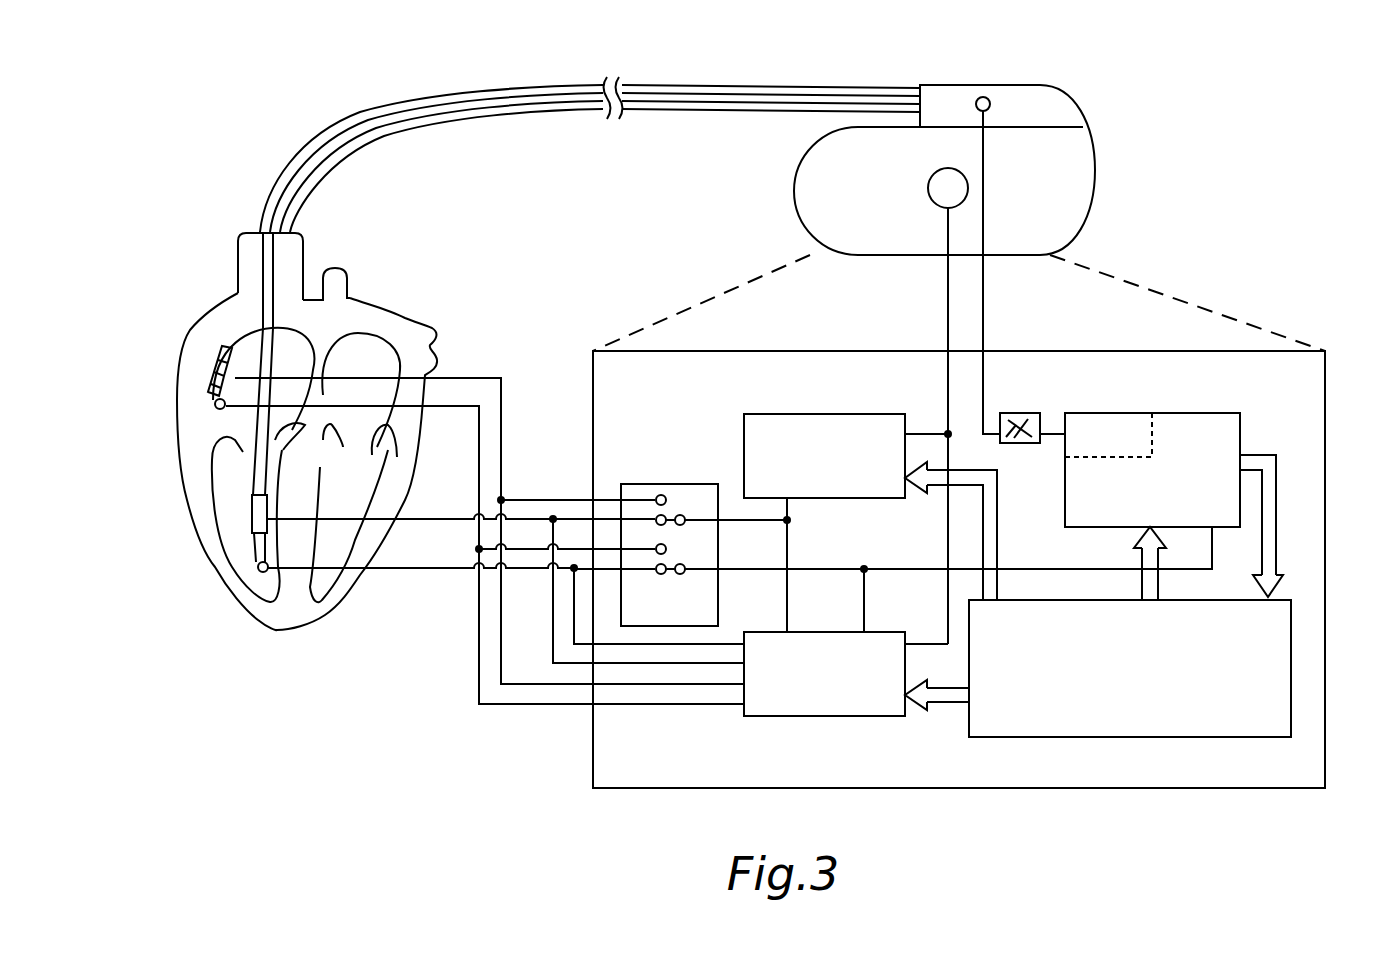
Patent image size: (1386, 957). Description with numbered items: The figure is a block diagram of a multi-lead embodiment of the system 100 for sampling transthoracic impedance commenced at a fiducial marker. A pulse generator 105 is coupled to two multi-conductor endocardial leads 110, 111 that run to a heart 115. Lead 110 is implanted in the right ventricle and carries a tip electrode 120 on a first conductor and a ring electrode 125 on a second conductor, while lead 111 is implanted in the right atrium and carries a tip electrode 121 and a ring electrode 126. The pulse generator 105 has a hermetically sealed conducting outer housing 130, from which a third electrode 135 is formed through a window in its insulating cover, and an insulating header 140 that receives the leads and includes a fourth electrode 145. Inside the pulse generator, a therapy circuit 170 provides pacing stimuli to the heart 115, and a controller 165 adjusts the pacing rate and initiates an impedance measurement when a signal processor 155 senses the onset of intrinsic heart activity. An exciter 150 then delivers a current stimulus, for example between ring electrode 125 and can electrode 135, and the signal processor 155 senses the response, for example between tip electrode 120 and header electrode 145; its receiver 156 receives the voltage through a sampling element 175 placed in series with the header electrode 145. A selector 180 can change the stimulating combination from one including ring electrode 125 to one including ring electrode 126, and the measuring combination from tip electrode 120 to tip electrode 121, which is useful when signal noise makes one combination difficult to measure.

The system 100 is at (458, 712).
The pulse generator 105 is at (1130, 124).
The endocardial lead 110 is at (510, 104).
The endocardial lead 111 is at (488, 93).
The heart 115 is at (340, 604).
The tip electrode 120 is at (258, 574).
The tip electrode 121 is at (215, 407).
The ring electrode 125 is at (252, 510).
The ring electrode 126 is at (228, 375).
The outer housing 130 is at (1096, 178).
The third electrode 135 is at (926, 190).
The header 140 is at (1026, 86).
The fourth electrode 145 is at (980, 97).
The exciter 150 is at (829, 414).
The signal processor 155 is at (1165, 413).
The receiver 156 is at (1157, 437).
The controller 165 is at (1130, 738).
The therapy circuit 170 is at (829, 632).
The sampling element 175 is at (1020, 413).
The selector 180 is at (674, 484).